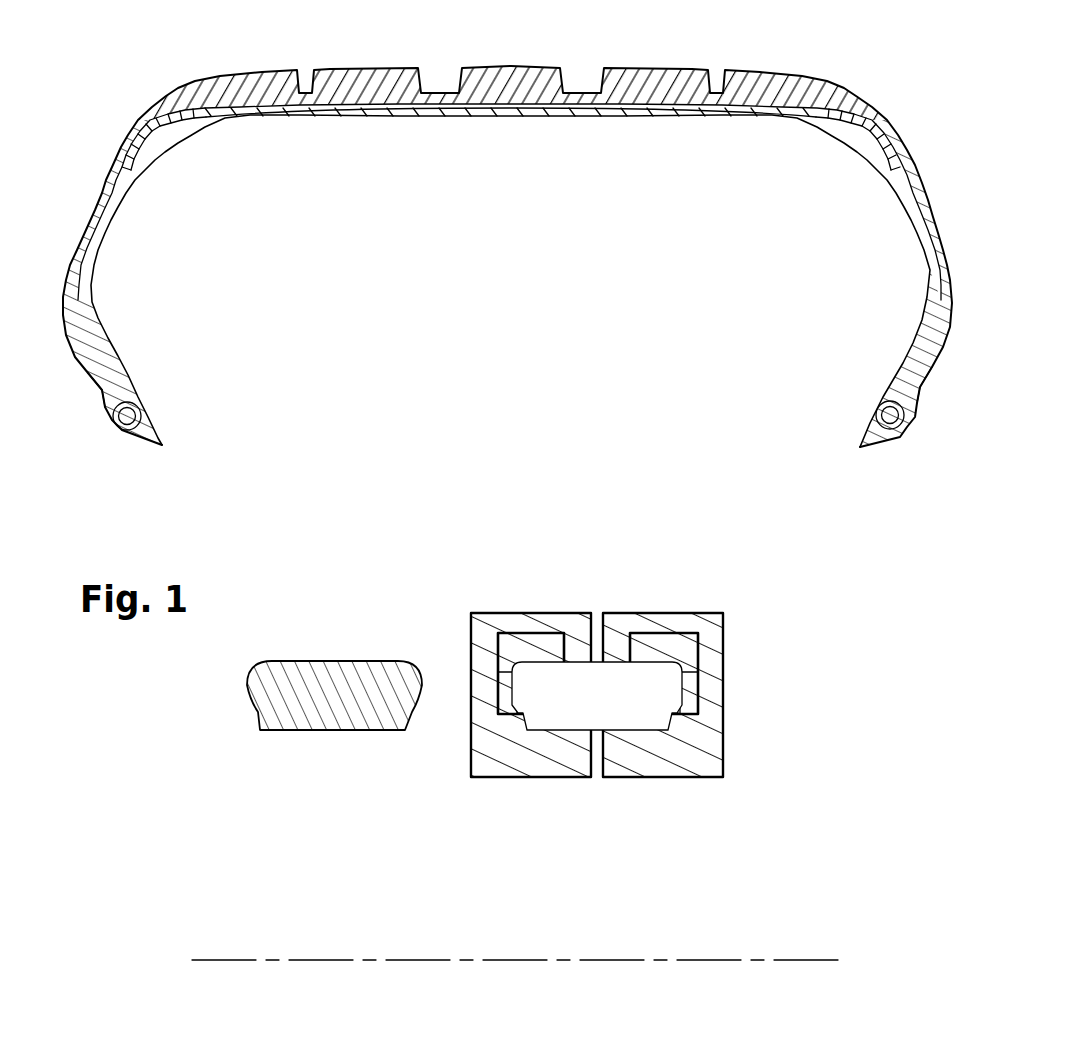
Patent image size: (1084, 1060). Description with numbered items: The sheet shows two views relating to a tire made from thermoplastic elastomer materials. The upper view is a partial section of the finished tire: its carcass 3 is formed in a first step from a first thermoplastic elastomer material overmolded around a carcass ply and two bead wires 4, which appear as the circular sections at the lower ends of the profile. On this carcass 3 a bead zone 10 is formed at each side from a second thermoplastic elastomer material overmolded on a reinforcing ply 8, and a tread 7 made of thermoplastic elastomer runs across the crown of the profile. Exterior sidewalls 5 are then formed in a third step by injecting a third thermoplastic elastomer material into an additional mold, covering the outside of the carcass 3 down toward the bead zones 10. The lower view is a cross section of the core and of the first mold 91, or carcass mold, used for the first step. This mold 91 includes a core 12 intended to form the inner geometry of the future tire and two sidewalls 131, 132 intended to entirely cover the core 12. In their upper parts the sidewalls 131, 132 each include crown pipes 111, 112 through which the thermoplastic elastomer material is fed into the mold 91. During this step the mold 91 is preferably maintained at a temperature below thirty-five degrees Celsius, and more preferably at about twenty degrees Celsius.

In FIG. 1, the carcass 3 is at (102, 318).
In FIG. 1, the bead wire 4 is at (127, 417).
In FIG. 1, the exterior sidewall 5 is at (68, 300).
In FIG. 1, the tread 7 is at (767, 94).
In FIG. 1, the reinforcing ply 8 is at (810, 117).
In FIG. 1, the bead zone 10 is at (81, 399).
In FIG. 2, the core 12 is at (330, 707).
In FIG. 2, the first mold 91 is at (636, 645).
In FIG. 2, the crown pipe 111 is at (667, 630).
In FIG. 2, the crown pipe 112 is at (527, 630).
In FIG. 2, the sidewall of the mold 131 is at (717, 662).
In FIG. 2, the sidewall of the mold 132 is at (478, 633).